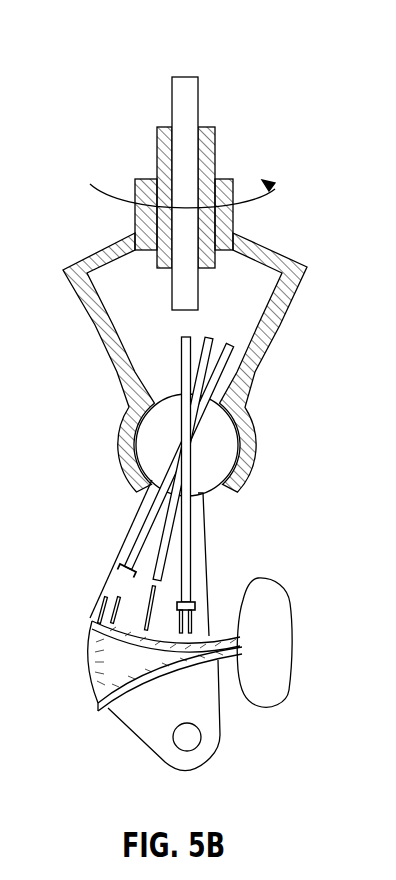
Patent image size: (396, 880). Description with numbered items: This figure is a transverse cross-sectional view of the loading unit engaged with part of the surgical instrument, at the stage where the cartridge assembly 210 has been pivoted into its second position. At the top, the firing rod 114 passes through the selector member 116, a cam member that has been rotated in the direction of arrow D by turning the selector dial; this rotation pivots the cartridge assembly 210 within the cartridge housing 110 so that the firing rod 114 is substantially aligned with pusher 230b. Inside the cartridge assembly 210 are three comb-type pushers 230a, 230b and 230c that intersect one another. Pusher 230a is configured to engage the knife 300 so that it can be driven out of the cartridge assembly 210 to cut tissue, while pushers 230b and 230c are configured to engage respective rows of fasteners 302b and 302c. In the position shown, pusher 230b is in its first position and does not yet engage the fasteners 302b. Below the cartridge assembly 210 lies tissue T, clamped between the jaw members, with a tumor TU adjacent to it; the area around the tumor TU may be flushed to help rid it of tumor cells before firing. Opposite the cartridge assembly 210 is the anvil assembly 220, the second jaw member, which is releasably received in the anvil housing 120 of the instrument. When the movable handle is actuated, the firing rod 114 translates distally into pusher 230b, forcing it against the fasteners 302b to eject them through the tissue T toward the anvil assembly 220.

The firing rod 114 is at (192, 132).
The selector member 116 is at (215, 157).
The cartridge housing 110 is at (250, 248).
The cartridge assembly 210 is at (237, 285).
The pusher 230a is at (208, 333).
The pusher 230b is at (187, 333).
The pusher 230c is at (233, 343).
The knife 300 is at (156, 604).
The fasteners 302b is at (195, 620).
The fasteners 302c is at (100, 607).
The anvil housing 120 is at (185, 738).
The anvil assembly 220 is at (207, 752).
The arrow D is at (182, 180).
The tissue T is at (88, 670).
The tumor TU is at (278, 652).